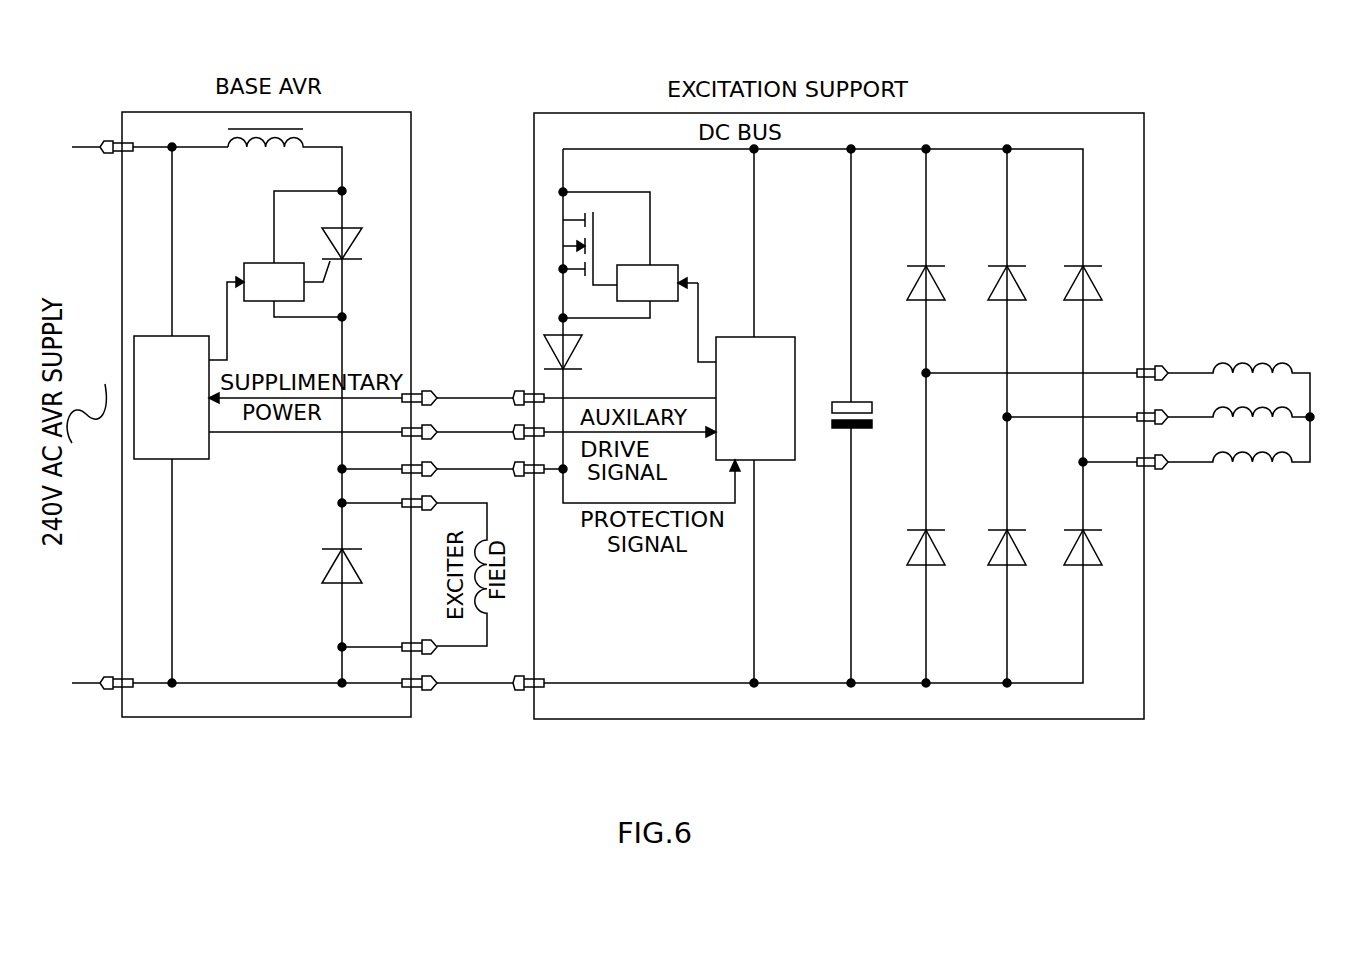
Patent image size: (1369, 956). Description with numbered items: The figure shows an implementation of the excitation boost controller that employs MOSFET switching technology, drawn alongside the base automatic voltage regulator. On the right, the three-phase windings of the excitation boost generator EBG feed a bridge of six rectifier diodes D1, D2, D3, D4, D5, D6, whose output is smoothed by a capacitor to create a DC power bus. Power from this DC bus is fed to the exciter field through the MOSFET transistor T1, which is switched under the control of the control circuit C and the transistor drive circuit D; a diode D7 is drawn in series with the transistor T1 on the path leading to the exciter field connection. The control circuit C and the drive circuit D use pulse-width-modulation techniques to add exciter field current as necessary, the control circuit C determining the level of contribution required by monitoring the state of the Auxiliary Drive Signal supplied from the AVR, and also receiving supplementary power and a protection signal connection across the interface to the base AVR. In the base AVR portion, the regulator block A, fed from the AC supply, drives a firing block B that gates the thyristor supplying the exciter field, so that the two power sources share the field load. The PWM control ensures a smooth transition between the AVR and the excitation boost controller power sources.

The base AVR control unit A is at (171, 397).
The thyristor firing circuit B is at (274, 282).
The control circuit C is at (755, 398).
The transistor drive circuit D is at (647, 283).
The MOSFET transistor T1 is at (606, 255).
The diode D1 is at (918, 266).
The diode D2 is at (918, 532).
The diode D3 is at (1000, 266).
The diode D4 is at (998, 532).
The diode D5 is at (1077, 266).
The diode D6 is at (1076, 532).
The diode D7 is at (587, 351).
The excitation boost generator EBG is at (1268, 412).